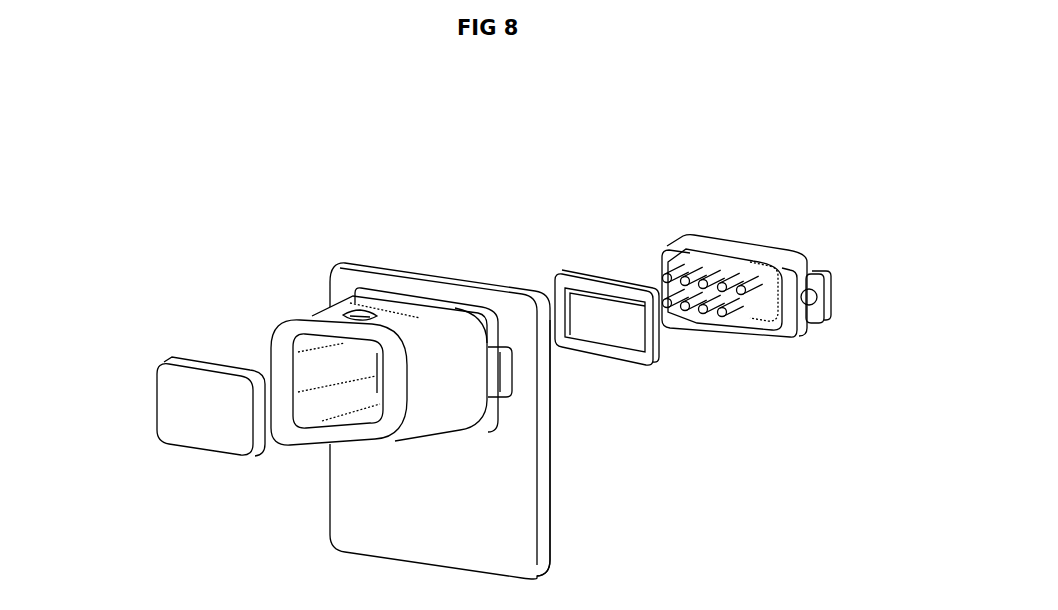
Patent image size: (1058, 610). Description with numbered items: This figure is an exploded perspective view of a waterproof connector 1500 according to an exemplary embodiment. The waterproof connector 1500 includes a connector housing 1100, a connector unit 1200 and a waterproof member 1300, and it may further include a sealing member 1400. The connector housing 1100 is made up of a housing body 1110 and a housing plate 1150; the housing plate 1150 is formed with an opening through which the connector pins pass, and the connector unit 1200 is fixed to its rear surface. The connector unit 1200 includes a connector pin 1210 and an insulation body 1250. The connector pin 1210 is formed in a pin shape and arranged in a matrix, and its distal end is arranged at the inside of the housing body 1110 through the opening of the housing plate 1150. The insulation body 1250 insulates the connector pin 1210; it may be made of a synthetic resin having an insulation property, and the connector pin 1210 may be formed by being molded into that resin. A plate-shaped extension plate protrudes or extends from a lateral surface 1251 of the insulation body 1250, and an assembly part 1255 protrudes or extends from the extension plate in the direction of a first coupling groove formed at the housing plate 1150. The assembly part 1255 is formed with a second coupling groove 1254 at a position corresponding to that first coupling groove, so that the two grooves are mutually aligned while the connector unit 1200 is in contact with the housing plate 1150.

The connector housing 1100 is at (337, 304).
The housing body 1110 is at (286, 338).
The housing plate 1150 is at (552, 523).
The connector unit 1200 is at (805, 264).
The connector pin 1210 is at (730, 318).
The insulation body 1250 is at (767, 262).
The lateral surface 1251 is at (768, 308).
The second coupling groove 1254 is at (806, 298).
The assembly part 1255 is at (830, 308).
The waterproof member 1300 is at (155, 362).
The sealing member 1400 is at (600, 273).
The waterproof connector 1500 is at (515, 327).